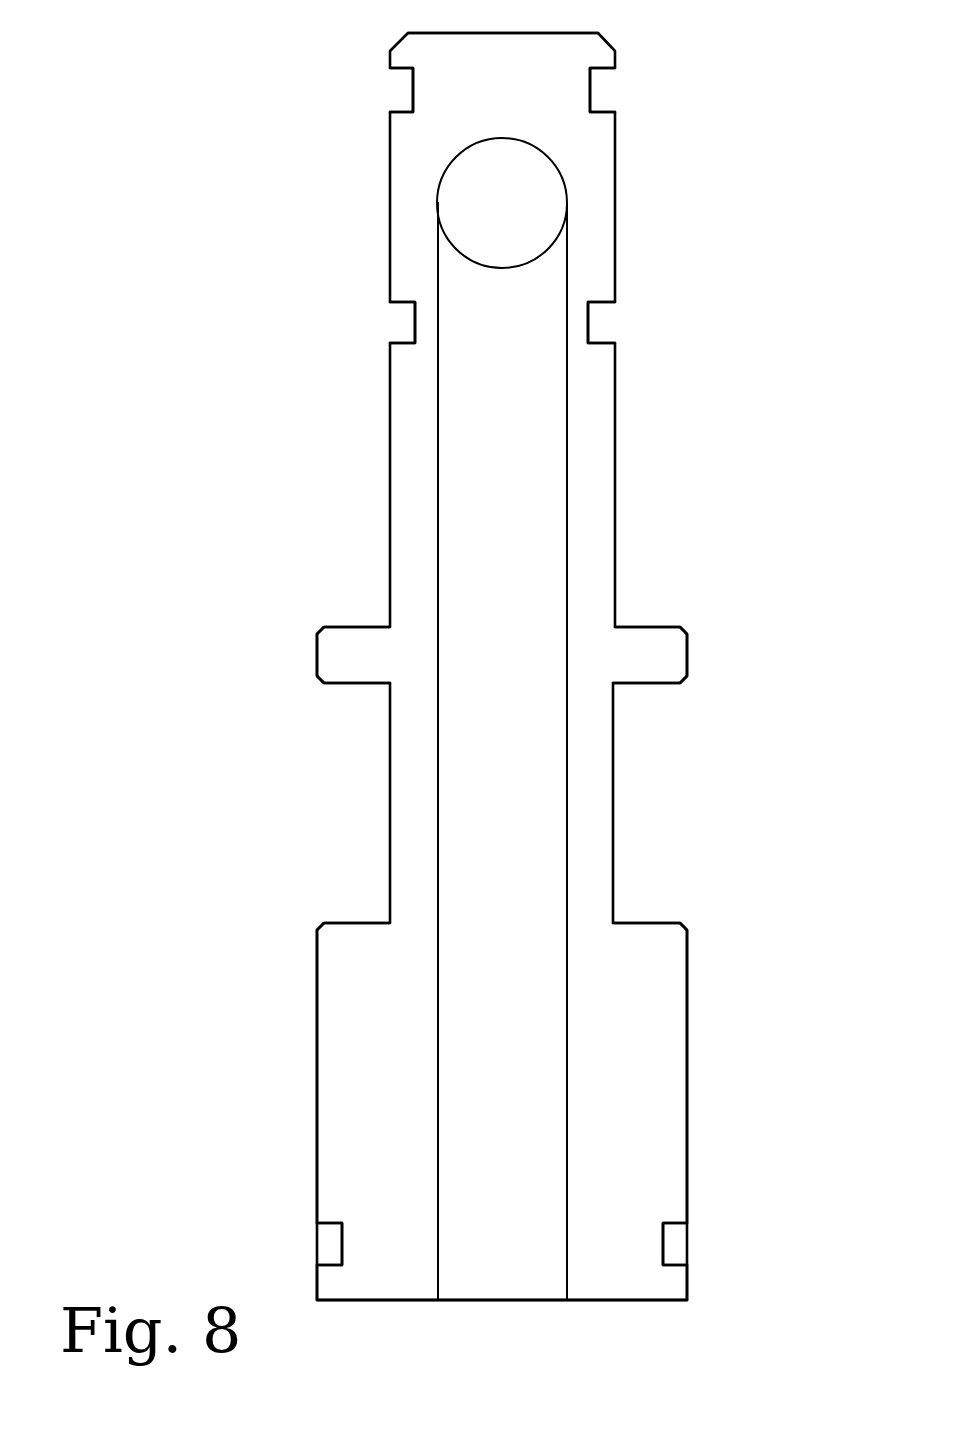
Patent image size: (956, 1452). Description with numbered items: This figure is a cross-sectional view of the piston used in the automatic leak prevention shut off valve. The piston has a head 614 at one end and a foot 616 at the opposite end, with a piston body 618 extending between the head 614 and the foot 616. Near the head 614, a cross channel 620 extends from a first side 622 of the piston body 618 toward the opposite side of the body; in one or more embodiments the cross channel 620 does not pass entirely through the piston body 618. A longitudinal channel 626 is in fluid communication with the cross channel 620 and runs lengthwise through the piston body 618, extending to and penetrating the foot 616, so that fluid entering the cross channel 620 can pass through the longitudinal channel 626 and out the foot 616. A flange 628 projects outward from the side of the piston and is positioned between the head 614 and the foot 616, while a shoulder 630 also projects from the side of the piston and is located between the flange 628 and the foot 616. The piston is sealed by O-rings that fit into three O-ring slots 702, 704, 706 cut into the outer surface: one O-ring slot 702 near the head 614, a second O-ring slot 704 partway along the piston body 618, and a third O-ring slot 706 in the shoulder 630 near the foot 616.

The head 614 is at (528, 33).
The foot 616 is at (590, 1300).
The piston body 618 is at (615, 150).
The cross channel 620 is at (502, 203).
The first side 622 is at (413, 198).
The longitudinal channel 626 is at (502, 751).
The flange 628 is at (687, 653).
The shoulder 630 is at (687, 927).
The O-ring slot 702 is at (627, 88).
The O-ring slot 704 is at (623, 322).
The O-ring slot 706 is at (697, 1242).